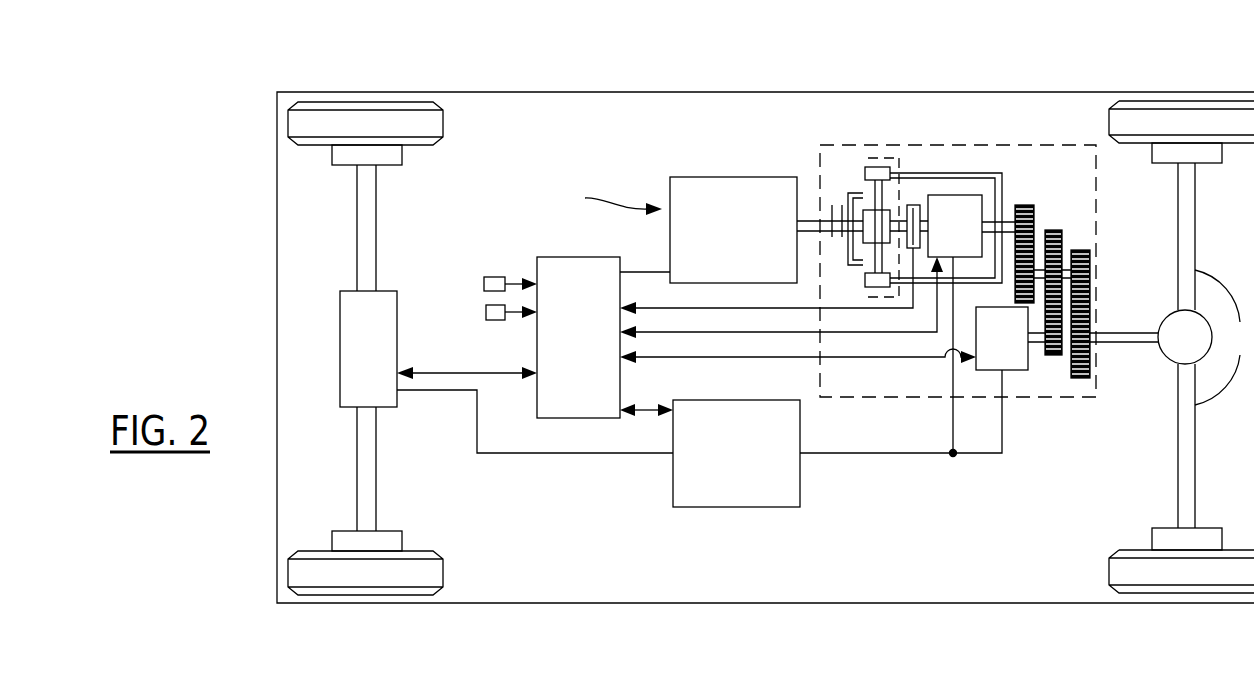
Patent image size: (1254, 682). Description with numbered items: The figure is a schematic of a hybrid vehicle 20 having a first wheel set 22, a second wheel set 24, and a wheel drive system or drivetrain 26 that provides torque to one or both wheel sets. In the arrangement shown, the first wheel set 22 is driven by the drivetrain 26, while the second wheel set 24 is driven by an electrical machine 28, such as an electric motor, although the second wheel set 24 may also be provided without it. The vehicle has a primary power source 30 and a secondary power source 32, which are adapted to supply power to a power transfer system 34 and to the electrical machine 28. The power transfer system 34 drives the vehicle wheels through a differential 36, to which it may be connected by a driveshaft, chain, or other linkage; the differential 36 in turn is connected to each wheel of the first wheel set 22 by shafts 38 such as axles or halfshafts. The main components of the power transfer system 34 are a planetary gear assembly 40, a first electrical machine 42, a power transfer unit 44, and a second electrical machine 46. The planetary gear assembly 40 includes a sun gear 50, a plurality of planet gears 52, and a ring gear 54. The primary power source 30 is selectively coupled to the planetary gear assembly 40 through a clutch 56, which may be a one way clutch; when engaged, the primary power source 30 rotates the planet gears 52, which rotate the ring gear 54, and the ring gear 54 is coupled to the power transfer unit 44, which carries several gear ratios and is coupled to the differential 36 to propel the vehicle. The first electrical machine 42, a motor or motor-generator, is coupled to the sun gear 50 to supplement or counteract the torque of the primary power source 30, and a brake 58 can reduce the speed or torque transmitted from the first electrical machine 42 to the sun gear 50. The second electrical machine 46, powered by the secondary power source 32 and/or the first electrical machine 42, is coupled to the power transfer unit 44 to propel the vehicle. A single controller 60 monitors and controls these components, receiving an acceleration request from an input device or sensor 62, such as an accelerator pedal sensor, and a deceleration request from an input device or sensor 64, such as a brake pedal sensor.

The hybrid vehicle 20 is at (526, 76).
The first wheel set 22 is at (1193, 86).
The second wheel set 24 is at (371, 88).
The drivetrain 26 is at (605, 200).
The electrical machine 28 is at (355, 357).
The primary power source 30 is at (695, 177).
The secondary power source 32 is at (715, 507).
The power transfer system 34 is at (831, 203).
The differential 36 is at (1172, 349).
The shafts 38 is at (1224, 337).
The planetary gear assembly 40 is at (893, 146).
The first electrical machine 42 is at (942, 238).
The power transfer unit 44 is at (1059, 208).
The second electrical machine 46 is at (989, 349).
The sun gear 50 is at (887, 238).
The planet gears 52 is at (864, 180).
The ring gear 54 is at (872, 167).
The clutch 56 is at (818, 210).
The brake 58 is at (915, 205).
The controller 60 is at (565, 345).
The sensor 62 is at (494, 277).
The sensor 64 is at (494, 320).